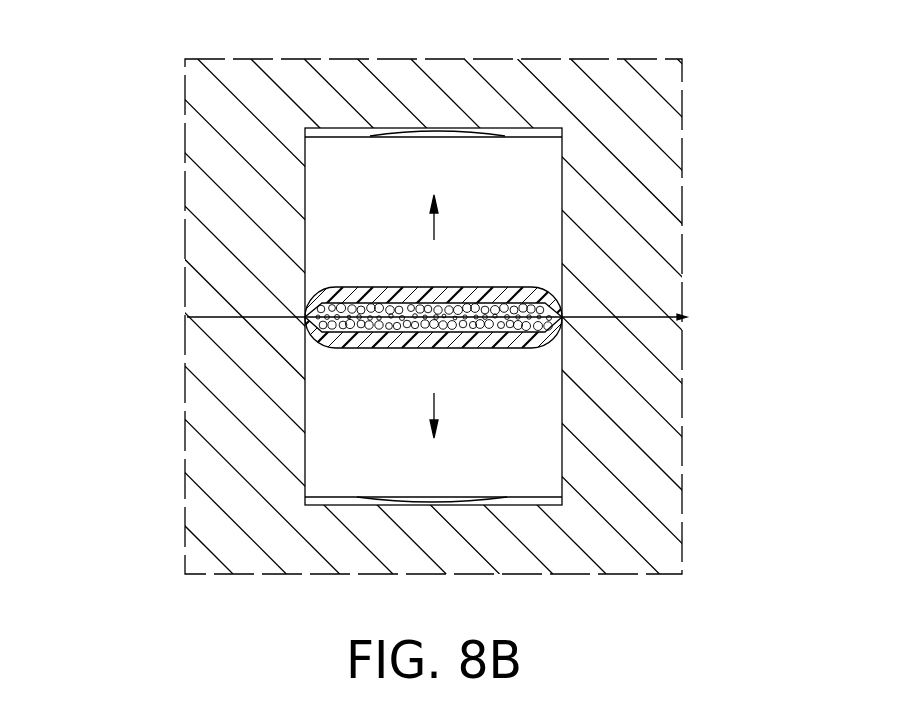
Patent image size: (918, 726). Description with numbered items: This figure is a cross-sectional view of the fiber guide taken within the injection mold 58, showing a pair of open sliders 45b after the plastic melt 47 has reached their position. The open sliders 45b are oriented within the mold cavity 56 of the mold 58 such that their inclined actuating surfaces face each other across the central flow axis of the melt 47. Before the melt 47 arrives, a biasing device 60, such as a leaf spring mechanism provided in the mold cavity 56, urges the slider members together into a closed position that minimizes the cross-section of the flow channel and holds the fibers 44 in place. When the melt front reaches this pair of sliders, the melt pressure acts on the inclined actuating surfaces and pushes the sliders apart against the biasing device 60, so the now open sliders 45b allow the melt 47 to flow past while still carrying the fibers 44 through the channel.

The mold cavity 56 is at (543, 128).
The open sliders 45b is at (340, 188).
The biasing device 60 is at (312, 130).
The plastic melt 47 is at (308, 284).
The fibers 44 is at (306, 314).
The mold 58 is at (683, 316).